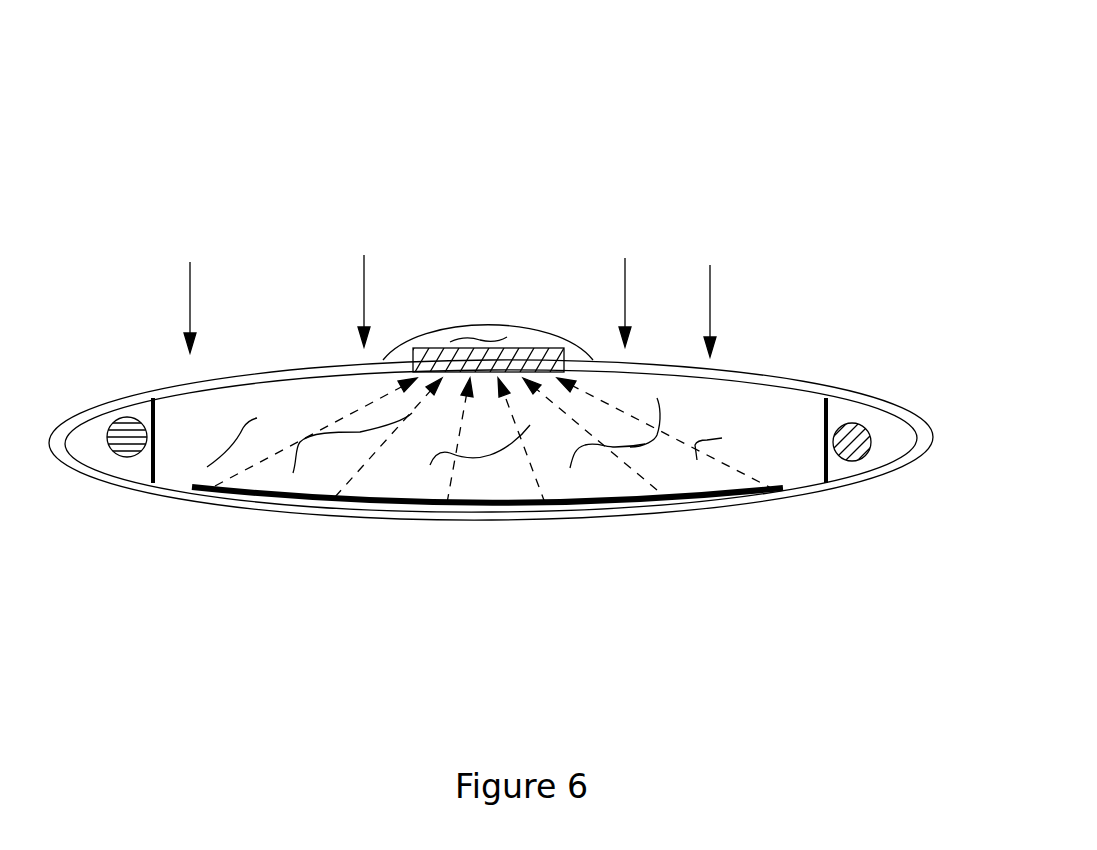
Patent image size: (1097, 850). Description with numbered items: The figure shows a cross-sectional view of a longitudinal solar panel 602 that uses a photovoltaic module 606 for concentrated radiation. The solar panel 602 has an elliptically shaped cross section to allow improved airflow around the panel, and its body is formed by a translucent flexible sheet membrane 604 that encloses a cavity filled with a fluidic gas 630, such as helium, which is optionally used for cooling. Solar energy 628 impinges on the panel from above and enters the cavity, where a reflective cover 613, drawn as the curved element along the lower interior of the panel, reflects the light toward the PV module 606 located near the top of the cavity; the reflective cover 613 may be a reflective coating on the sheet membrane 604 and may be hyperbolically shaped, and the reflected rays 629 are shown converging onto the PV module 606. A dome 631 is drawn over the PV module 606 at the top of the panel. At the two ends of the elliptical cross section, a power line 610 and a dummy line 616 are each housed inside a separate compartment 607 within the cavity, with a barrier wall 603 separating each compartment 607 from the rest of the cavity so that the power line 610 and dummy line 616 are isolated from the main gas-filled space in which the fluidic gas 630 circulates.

The longitudinal solar panel 602 is at (645, 62).
The barrier wall 603 is at (826, 428).
The translucent flexible sheet membrane 604 is at (308, 364).
The photovoltaic module 606 is at (537, 348).
The compartment 607 is at (892, 447).
The power line 610 is at (852, 461).
The reflective cover 613 is at (510, 508).
The dummy line 616 is at (115, 457).
The solar energy 628 is at (190, 303).
The reflected light 629 is at (353, 468).
The fluidic gas 630 is at (745, 423).
The dome 631 is at (442, 327).